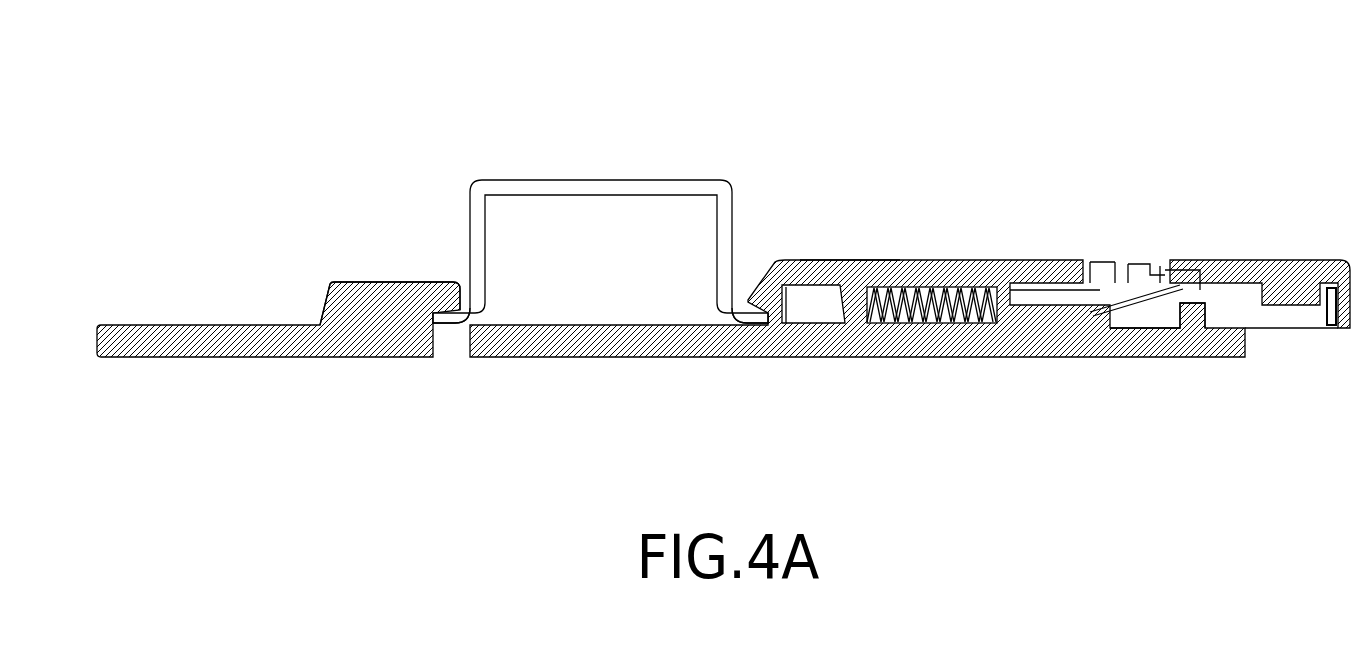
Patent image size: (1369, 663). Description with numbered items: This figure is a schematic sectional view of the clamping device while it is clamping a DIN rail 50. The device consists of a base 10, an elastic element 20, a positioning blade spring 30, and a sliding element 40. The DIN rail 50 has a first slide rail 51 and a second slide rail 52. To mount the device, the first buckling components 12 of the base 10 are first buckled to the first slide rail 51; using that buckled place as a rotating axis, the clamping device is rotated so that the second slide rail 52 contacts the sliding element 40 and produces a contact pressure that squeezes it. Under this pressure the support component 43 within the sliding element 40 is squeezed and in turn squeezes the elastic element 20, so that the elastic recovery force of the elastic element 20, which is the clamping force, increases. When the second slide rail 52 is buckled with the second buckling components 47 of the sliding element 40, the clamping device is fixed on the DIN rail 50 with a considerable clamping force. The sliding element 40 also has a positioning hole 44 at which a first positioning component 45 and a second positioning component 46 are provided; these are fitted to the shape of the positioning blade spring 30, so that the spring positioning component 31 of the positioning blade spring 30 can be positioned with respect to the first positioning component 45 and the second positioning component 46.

The base 10 is at (213, 336).
The first buckling components 12 is at (403, 283).
The elastic element 20 is at (950, 328).
The positioning blade spring 30 is at (1115, 328).
The spring positioning component 31 is at (1185, 306).
The sliding element 40 is at (950, 260).
The support component 43 is at (858, 265).
The positioning hole 44 is at (1103, 250).
The first positioning component 45 is at (1139, 262).
The second positioning component 46 is at (1173, 262).
The second buckling components 47 is at (780, 330).
The DIN rail 50 is at (605, 185).
The first slide rail 51 is at (455, 320).
The second slide rail 52 is at (748, 302).